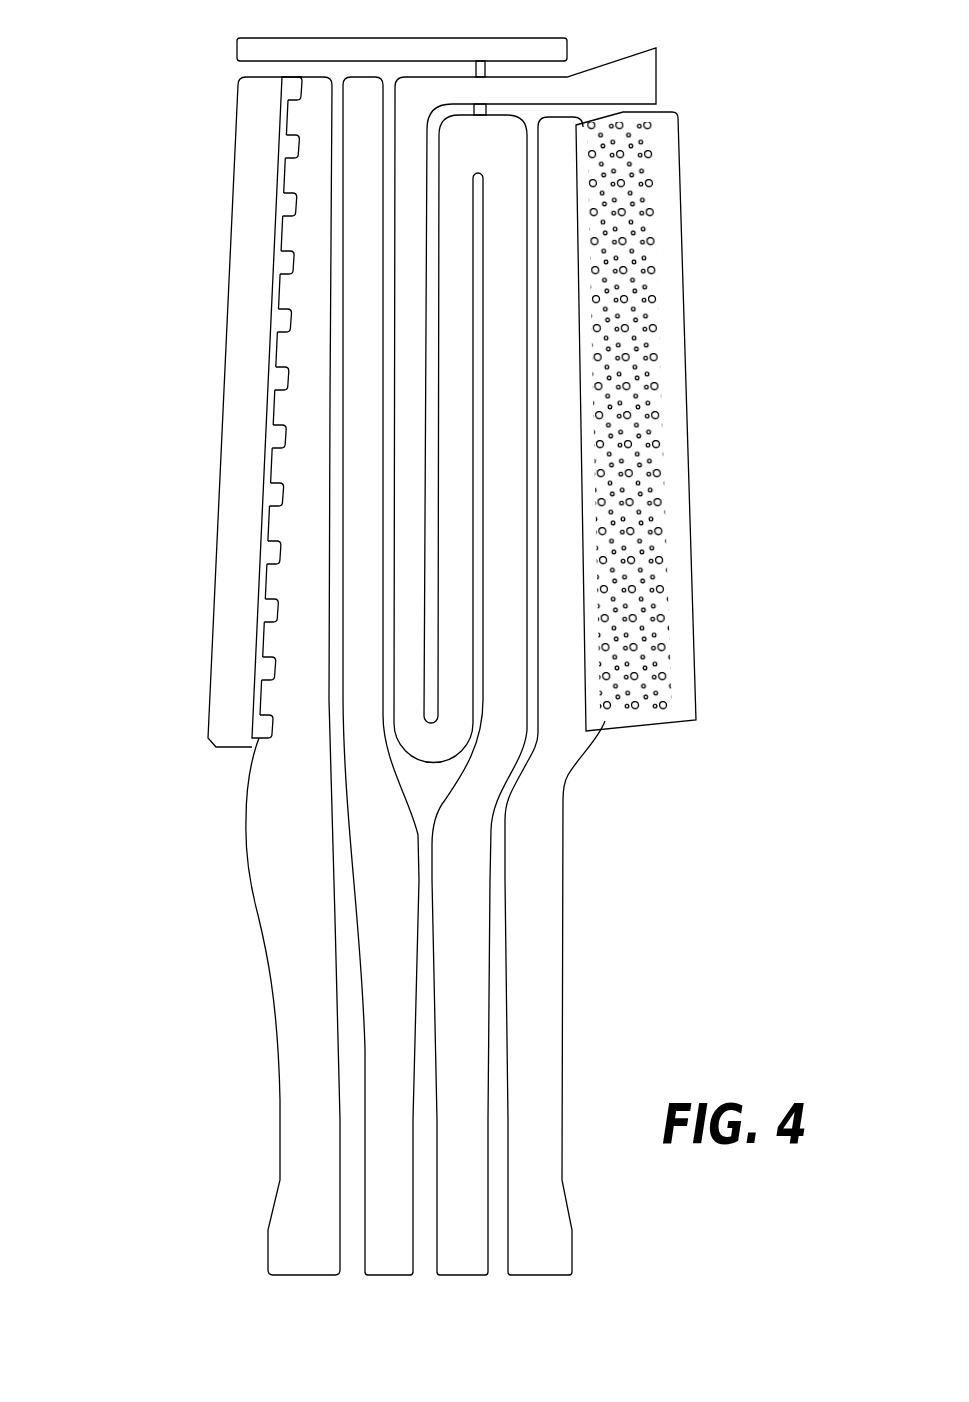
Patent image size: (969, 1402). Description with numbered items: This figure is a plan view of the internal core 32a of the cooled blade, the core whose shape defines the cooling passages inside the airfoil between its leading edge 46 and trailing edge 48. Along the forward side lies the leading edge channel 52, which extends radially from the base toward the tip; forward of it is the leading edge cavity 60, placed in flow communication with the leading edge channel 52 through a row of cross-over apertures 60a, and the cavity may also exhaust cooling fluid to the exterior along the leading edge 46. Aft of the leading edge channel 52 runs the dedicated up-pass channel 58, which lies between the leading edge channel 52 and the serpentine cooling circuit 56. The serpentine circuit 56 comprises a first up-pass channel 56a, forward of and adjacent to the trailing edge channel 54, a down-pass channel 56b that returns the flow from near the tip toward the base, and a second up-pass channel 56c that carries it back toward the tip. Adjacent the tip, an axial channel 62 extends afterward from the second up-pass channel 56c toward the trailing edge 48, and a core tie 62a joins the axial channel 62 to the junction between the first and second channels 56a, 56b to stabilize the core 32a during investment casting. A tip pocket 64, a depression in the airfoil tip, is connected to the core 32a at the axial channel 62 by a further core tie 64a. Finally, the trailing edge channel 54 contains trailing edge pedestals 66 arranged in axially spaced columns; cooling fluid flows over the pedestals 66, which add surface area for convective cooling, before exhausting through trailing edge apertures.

The internal core 32a is at (116, 80).
The leading edge 46 is at (216, 590).
The trailing edge 48 is at (680, 421).
The leading edge channel 52 is at (313, 212).
The trailing edge channel 54 is at (560, 585).
The serpentine cooling circuit 56 is at (397, 689).
The first up-pass channel 56a is at (515, 530).
The down-pass channel 56b is at (455, 435).
The second up-pass channel 56c is at (410, 165).
The dedicated up-pass channel 58 is at (359, 117).
The leading edge cavity 60 is at (222, 375).
The cross-over apertures 60a is at (285, 357).
The axial channel 62 is at (568, 77).
The core tie 62a is at (488, 108).
The tip pocket 64 is at (457, 37).
The core tie 64a is at (490, 66).
The trailing edge pedestals 66 is at (597, 352).